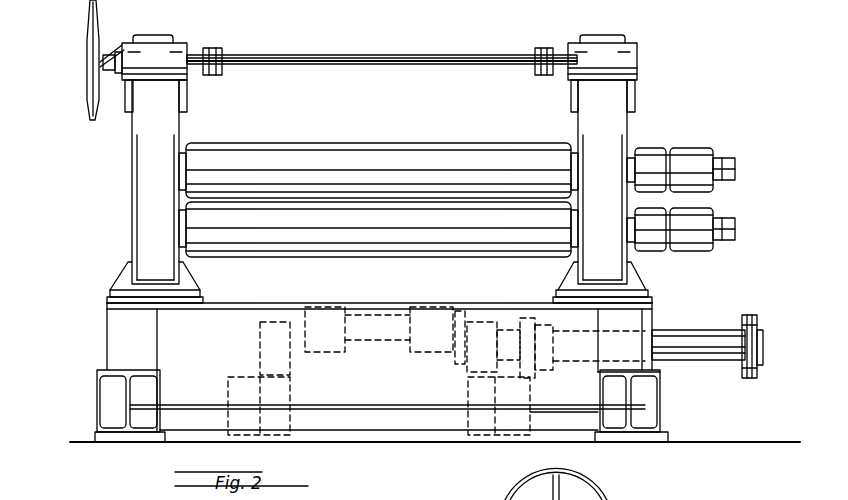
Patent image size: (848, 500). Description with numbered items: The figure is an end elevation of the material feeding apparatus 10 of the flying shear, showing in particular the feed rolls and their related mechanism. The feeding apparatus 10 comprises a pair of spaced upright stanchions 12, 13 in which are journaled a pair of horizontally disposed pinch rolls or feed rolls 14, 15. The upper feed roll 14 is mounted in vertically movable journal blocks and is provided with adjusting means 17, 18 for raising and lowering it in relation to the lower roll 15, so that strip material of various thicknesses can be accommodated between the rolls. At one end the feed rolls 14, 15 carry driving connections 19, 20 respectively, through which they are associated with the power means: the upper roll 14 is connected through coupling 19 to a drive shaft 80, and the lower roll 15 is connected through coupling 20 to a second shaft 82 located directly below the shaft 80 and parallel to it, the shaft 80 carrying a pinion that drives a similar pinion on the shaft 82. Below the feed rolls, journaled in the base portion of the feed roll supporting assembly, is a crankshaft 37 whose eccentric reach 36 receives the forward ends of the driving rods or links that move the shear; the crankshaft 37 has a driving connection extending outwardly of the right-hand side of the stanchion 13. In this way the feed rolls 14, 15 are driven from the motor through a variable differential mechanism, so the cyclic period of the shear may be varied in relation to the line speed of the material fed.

The material feeding apparatus 10 is at (194, 384).
The upright stanchion 12 is at (168, 126).
The upright stanchion 13 is at (616, 126).
The upper feed roll 14 is at (312, 155).
The lower feed roll 15 is at (328, 246).
The adjusting means 17 is at (88, 98).
The adjusting means 18 is at (284, 60).
The driving connection 19 is at (690, 156).
The driving connection 20 is at (692, 240).
The eccentric reach 36 is at (320, 352).
The crankshaft 37 is at (690, 354).
The drive shaft 80 is at (735, 169).
The second shaft 82 is at (735, 228).